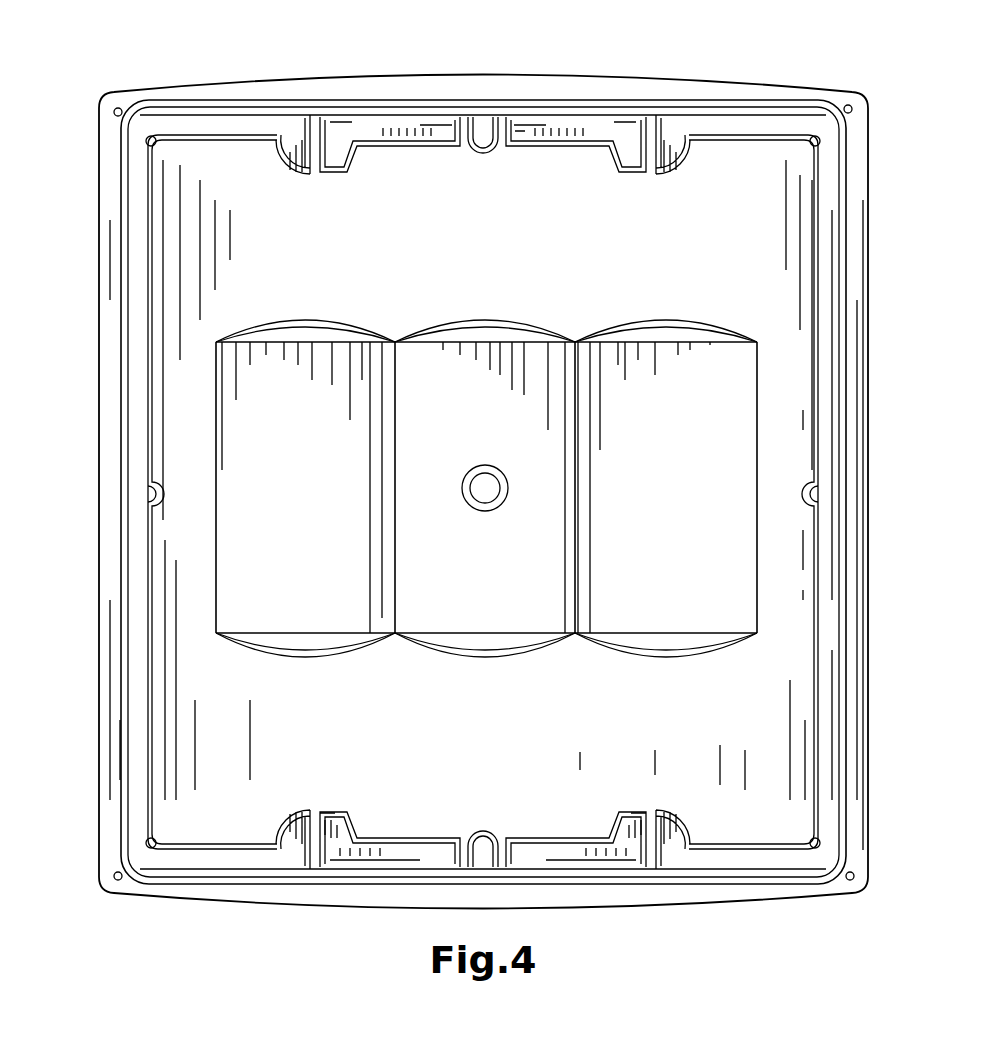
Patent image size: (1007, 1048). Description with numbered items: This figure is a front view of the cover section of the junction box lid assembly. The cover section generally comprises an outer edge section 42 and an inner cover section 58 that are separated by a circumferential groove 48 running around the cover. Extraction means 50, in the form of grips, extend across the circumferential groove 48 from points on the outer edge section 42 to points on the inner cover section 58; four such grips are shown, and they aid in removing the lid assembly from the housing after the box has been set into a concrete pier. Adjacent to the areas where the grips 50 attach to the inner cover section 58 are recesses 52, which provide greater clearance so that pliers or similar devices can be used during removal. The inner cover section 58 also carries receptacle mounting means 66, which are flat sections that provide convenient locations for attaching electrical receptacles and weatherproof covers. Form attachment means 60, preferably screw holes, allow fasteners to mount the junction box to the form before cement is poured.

The outer edge section 42 is at (113, 188).
The circumferential groove 48 is at (138, 262).
The extraction means 50 is at (307, 130).
The recesses 52 is at (293, 150).
The inner cover section 58 is at (177, 358).
The form attachment means 60 is at (115, 109).
The receptacle mounting means 66 is at (340, 573).